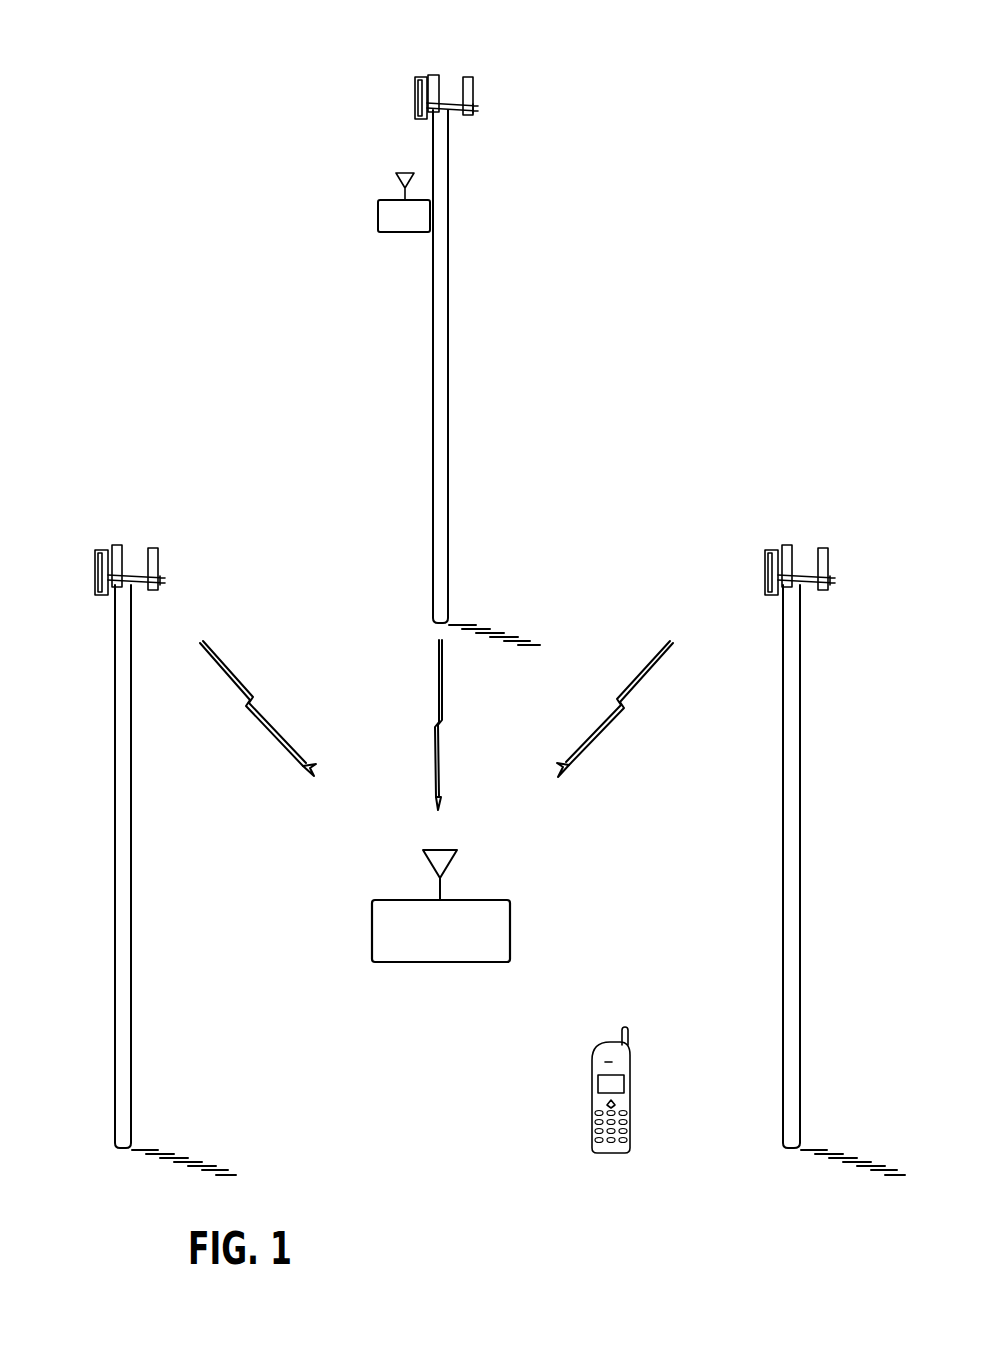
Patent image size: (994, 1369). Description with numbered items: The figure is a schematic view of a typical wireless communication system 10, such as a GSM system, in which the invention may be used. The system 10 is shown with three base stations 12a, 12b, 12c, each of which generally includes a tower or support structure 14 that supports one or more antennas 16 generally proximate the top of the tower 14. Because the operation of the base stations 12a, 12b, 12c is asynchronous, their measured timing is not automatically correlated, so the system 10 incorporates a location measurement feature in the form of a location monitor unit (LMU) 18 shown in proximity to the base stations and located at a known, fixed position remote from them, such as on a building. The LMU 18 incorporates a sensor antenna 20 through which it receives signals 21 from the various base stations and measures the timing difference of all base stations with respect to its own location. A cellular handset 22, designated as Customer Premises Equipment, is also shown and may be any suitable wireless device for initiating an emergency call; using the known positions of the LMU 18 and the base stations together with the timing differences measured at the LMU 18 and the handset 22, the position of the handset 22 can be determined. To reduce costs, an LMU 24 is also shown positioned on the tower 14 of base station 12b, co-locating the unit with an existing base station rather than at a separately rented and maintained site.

The wireless communication system 10 is at (840, 400).
The base station 12a is at (132, 762).
The base station 12b is at (450, 295).
The base station 12c is at (802, 762).
The tower 14 is at (114, 910).
The antenna 16 is at (86, 532).
The location monitor unit 18 is at (370, 970).
The sensor antenna 20 is at (402, 170).
The signals 21 is at (255, 702).
The cellular handset 22 is at (578, 1036).
The LMU 24 is at (374, 245).